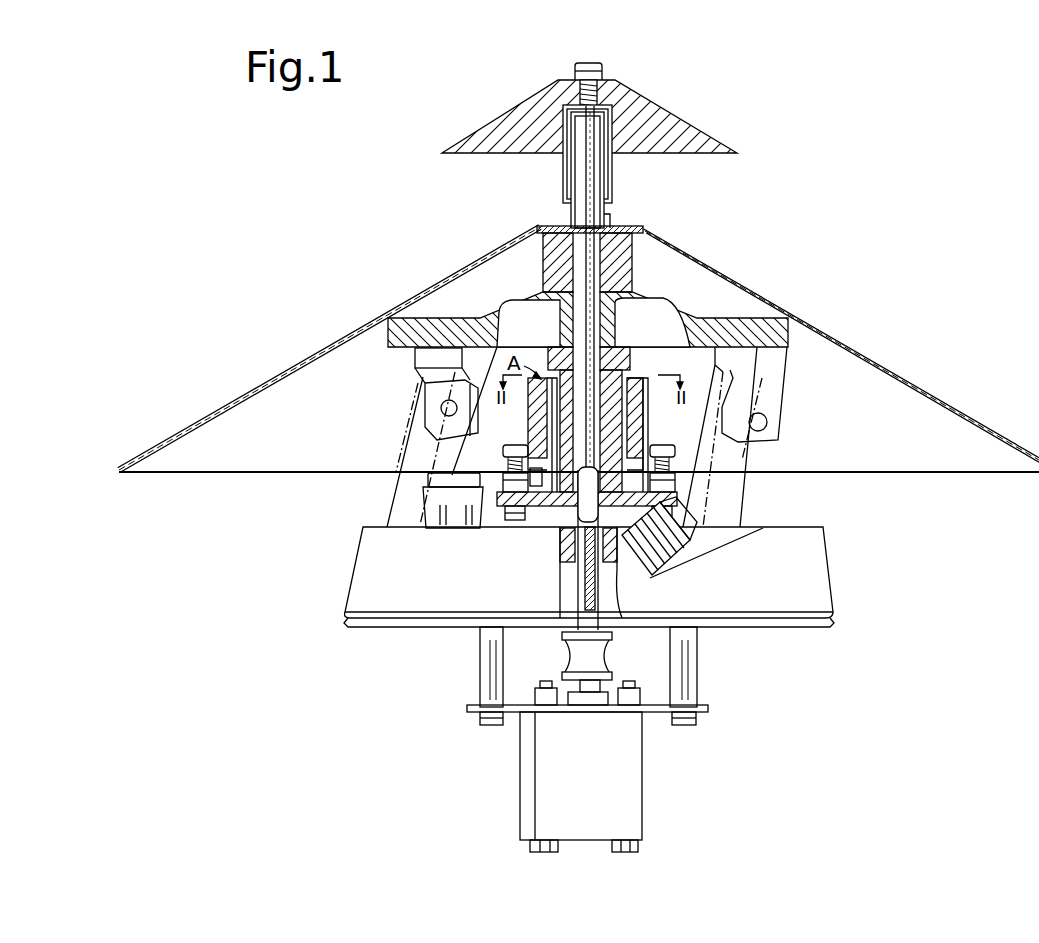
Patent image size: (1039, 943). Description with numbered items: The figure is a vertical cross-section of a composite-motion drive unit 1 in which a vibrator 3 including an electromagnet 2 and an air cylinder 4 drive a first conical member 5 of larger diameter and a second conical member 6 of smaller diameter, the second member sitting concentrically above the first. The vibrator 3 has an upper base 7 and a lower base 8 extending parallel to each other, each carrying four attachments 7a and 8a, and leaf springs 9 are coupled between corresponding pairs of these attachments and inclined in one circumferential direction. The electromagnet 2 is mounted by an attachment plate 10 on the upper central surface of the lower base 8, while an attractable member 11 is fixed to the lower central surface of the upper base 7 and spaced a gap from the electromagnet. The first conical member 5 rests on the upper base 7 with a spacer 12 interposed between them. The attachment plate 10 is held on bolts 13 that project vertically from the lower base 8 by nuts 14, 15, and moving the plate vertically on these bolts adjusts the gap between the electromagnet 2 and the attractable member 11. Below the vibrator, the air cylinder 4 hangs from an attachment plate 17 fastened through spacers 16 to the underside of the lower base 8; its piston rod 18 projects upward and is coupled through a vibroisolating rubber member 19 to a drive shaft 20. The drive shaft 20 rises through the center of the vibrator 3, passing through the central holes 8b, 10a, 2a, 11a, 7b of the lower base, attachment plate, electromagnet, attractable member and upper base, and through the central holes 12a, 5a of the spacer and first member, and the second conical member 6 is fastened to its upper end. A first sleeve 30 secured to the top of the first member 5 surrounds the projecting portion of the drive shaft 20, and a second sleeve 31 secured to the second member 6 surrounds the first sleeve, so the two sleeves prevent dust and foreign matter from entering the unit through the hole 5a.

The composite-motion drive unit 1 is at (362, 684).
The electromagnet 2 is at (636, 403).
The central hole of the electromagnet 2a is at (647, 420).
The vibrator 3 is at (728, 302).
The air cylinder 4 is at (632, 795).
The first conical member 5 is at (845, 352).
The central hole of the first conical member 5a is at (627, 228).
The second conical member 6 is at (630, 128).
The upper base 7 is at (588, 313).
The attachment 7a is at (437, 397).
The central hole of the upper base 7b is at (602, 338).
The lower base 8 is at (790, 536).
The attachment 8a is at (655, 576).
The central hole of the lower base 8b is at (568, 546).
The leaf spring 9 is at (430, 455).
The attachment plate 10 is at (680, 500).
The central hole of the attachment plate 10a is at (577, 506).
The attractable member 11 is at (634, 362).
The central hole of the attractable member 11a is at (556, 345).
The spacer 12 is at (556, 272).
The central hole of the spacer 12a is at (612, 272).
The bolt 13 is at (515, 445).
The nut 14 is at (500, 480).
The nut 15 is at (500, 522).
The spacer 16 is at (481, 667).
The attachment plate 17 is at (655, 712).
The piston rod 18 is at (602, 688).
The vibroisolating rubber member 19 is at (604, 656).
The drive shaft 20 is at (586, 600).
The first sleeve 30 is at (571, 213).
The second sleeve 31 is at (563, 183).